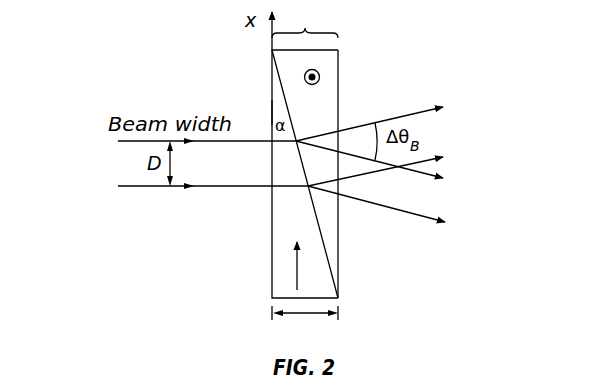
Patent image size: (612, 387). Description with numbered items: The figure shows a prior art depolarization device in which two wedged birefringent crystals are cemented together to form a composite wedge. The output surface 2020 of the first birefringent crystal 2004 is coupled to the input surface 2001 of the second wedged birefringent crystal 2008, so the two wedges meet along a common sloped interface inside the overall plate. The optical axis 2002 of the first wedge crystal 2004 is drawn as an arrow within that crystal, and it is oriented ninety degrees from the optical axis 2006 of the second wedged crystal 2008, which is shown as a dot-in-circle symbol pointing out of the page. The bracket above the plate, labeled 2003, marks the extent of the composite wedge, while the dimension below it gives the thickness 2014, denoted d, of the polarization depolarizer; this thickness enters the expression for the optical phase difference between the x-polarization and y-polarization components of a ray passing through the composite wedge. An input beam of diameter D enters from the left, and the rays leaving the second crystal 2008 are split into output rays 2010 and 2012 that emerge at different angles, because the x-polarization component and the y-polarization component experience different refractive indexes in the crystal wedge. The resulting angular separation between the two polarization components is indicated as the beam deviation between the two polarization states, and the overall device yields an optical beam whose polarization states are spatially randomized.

The input surface 2001 is at (326, 250).
The optical axis 2002 is at (297, 268).
The plate thickness region 2003 is at (305, 21).
The first birefringent crystal 2004 is at (272, 113).
The optical axis 2006 is at (320, 76).
The second wedged birefringent crystal 2008 is at (334, 278).
The first output beam 2010 is at (427, 110).
The second output beam 2012 is at (425, 217).
The thickness 2014 is at (313, 315).
The output surface 2020 is at (314, 212).